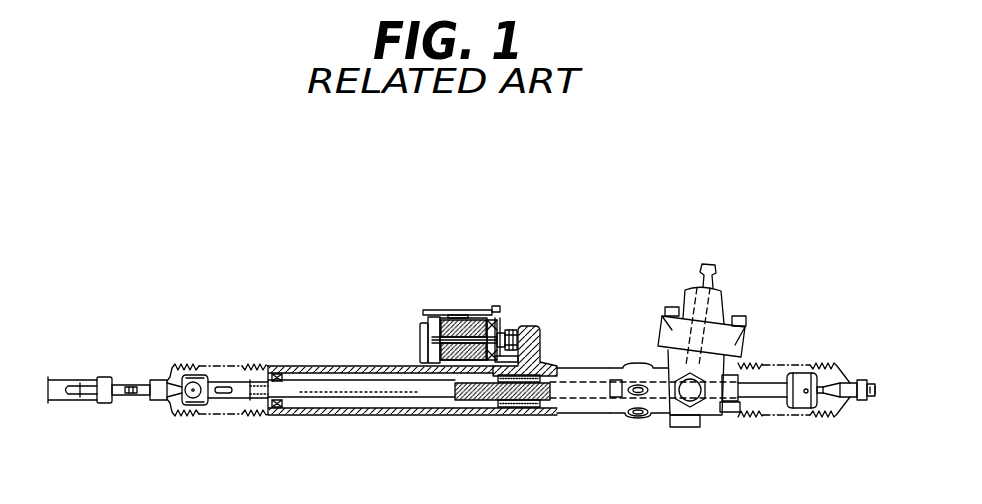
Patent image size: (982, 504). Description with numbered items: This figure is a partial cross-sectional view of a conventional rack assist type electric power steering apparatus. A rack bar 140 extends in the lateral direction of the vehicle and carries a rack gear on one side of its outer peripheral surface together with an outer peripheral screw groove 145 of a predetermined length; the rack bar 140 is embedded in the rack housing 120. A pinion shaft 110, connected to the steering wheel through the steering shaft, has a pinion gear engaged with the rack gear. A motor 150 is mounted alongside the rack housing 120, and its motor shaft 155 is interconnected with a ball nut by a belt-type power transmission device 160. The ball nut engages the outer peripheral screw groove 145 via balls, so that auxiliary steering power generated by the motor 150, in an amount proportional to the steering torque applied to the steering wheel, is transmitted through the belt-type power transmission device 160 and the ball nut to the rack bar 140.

The pinion shaft 110 is at (695, 264).
The rack housing 120 is at (378, 413).
The rack bar 140 is at (333, 398).
The outer peripheral screw groove 145 is at (465, 412).
The motor 150 is at (460, 310).
The motor shaft 155 is at (506, 330).
The belt-type power transmission device 160 is at (530, 323).